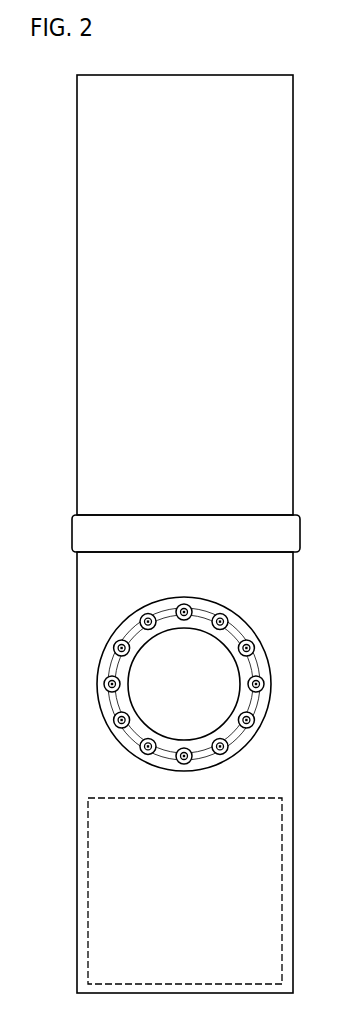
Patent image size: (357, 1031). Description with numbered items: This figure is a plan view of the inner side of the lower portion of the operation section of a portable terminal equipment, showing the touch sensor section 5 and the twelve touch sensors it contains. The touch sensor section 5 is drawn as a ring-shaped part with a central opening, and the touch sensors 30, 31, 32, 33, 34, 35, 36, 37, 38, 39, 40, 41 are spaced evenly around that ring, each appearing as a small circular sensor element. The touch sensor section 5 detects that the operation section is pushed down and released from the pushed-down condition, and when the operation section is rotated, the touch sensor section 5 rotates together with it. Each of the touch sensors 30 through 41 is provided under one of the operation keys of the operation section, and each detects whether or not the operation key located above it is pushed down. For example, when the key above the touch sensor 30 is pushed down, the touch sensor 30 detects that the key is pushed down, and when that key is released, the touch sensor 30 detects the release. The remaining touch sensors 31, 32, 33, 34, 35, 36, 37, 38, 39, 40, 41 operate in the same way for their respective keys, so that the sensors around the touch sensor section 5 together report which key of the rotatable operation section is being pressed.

The touch sensor section 5 is at (236, 607).
The touch sensor 30 is at (190, 604).
The touch sensor 31 is at (228, 618).
The touch sensor 32 is at (257, 652).
The touch sensor 33 is at (264, 685).
The touch sensor 34 is at (254, 722).
The touch sensor 35 is at (228, 750).
The touch sensor 36 is at (192, 764).
The touch sensor 37 is at (145, 755).
The touch sensor 38 is at (116, 728).
The touch sensor 39 is at (108, 692).
The touch sensor 40 is at (116, 642).
The touch sensor 41 is at (142, 613).